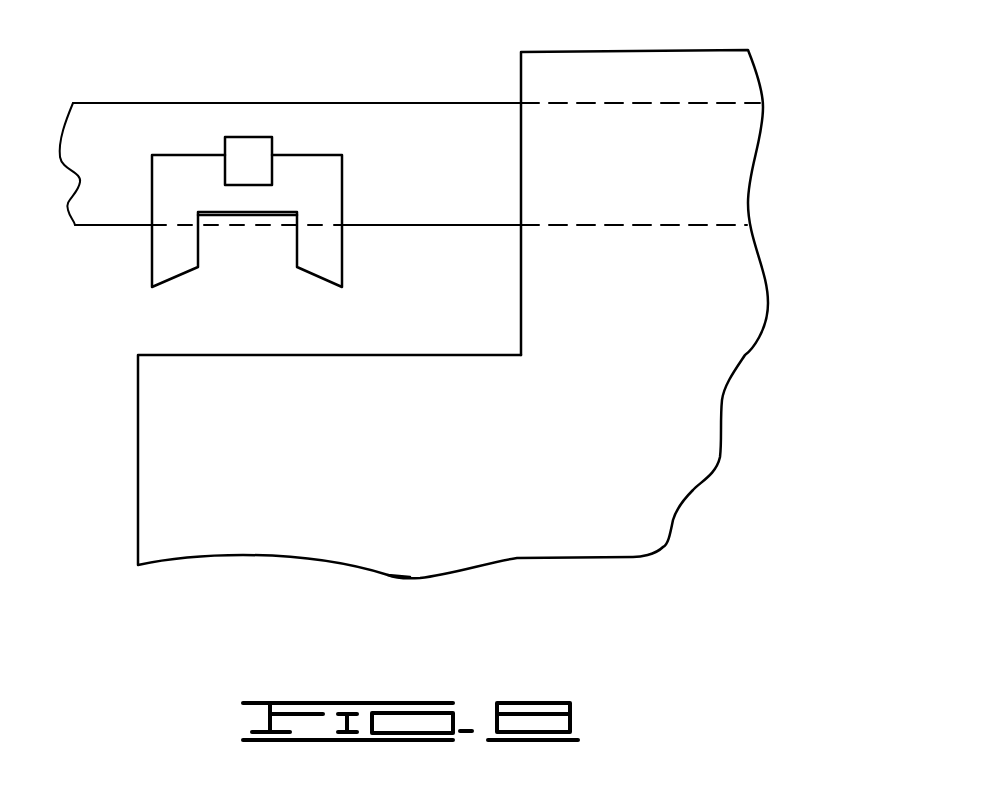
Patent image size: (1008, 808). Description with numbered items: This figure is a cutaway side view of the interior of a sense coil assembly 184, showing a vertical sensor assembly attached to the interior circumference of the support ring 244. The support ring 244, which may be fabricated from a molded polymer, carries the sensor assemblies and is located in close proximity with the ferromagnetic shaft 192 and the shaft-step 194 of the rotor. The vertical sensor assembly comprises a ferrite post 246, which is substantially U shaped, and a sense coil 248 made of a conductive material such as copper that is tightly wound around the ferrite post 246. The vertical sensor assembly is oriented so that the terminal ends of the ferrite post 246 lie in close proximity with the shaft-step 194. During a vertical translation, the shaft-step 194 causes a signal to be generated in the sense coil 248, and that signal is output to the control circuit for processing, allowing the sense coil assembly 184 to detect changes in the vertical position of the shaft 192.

The sense coil assembly 184 is at (168, 72).
The shaft 192 is at (668, 160).
The shaft-step 194 is at (433, 355).
The support ring 244 is at (395, 118).
The ferrite post 246 is at (322, 250).
The sense coil 248 is at (241, 150).